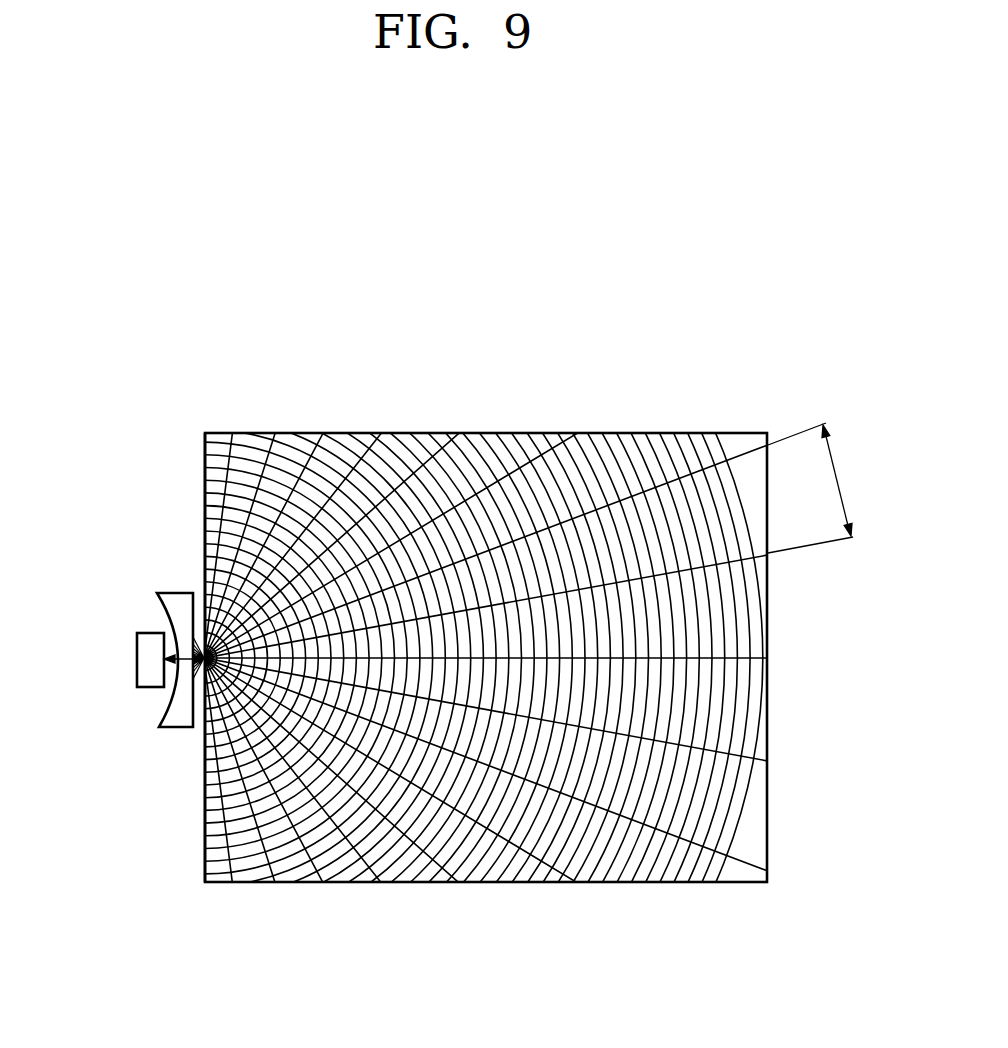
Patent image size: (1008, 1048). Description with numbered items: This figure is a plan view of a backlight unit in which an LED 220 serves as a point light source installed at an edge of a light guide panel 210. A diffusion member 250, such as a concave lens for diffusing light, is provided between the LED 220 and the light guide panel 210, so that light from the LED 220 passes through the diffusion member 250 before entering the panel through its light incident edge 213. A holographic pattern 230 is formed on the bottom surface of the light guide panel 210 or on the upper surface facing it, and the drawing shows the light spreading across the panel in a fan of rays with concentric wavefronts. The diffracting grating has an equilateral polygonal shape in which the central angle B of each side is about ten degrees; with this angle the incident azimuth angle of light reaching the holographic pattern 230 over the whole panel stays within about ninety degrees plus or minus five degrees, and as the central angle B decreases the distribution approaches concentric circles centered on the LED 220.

The light guide panel 210 is at (728, 432).
The light incident surface 213 is at (203, 528).
The LED 220 is at (137, 675).
The holographic pattern 230 is at (720, 566).
The diffusion member 250 is at (173, 727).
The central angle B is at (814, 488).